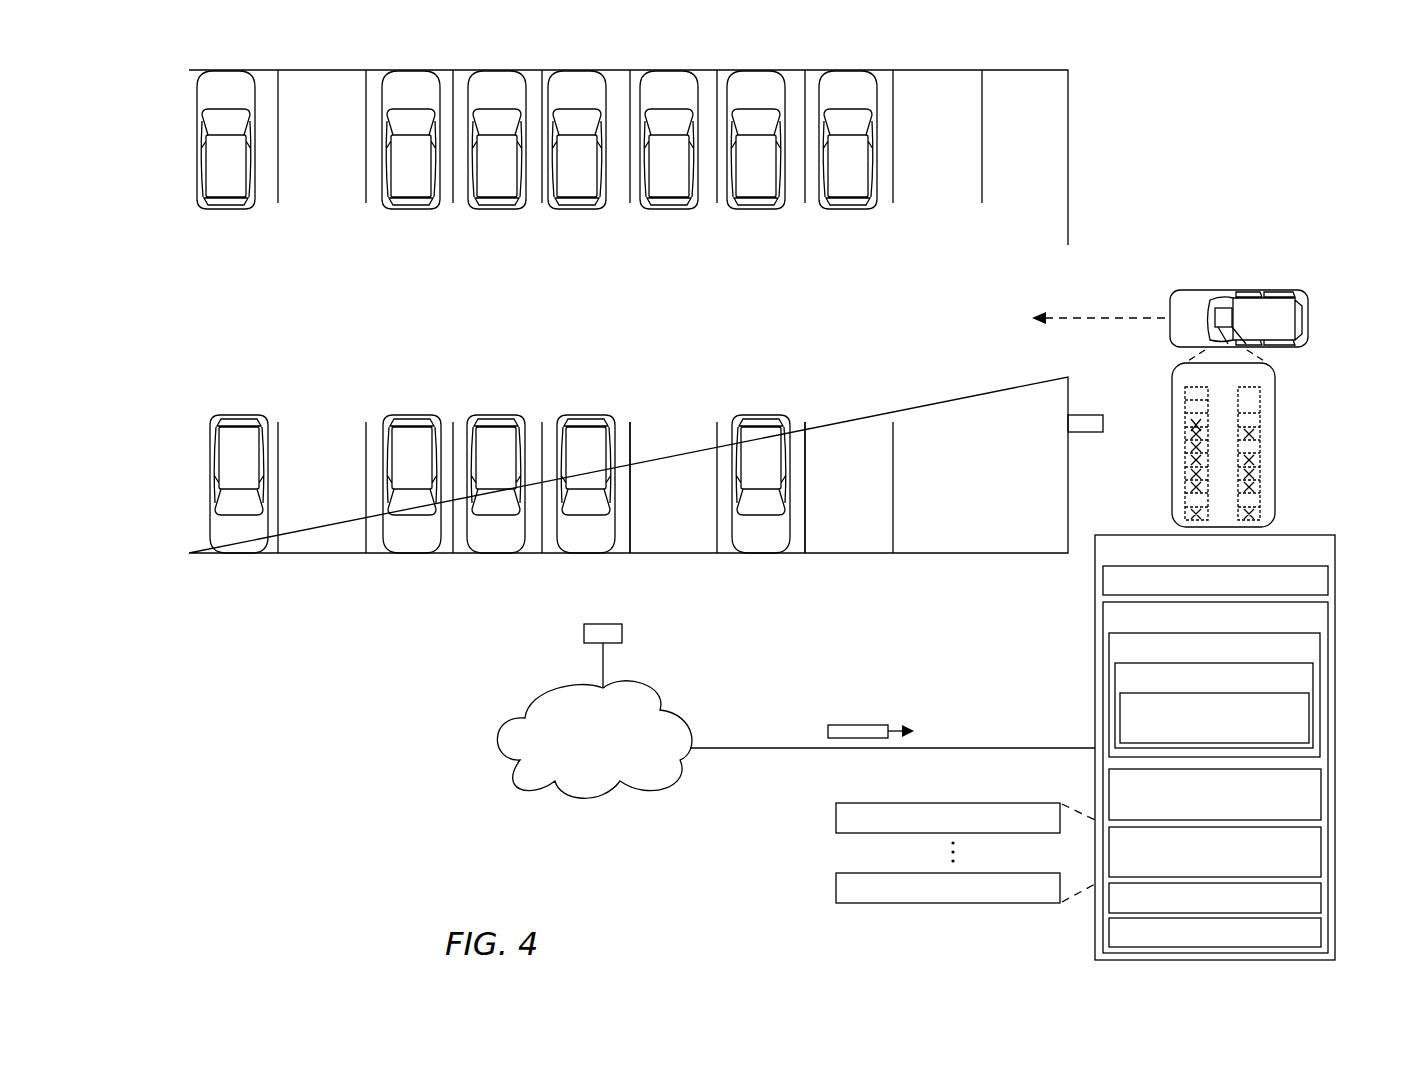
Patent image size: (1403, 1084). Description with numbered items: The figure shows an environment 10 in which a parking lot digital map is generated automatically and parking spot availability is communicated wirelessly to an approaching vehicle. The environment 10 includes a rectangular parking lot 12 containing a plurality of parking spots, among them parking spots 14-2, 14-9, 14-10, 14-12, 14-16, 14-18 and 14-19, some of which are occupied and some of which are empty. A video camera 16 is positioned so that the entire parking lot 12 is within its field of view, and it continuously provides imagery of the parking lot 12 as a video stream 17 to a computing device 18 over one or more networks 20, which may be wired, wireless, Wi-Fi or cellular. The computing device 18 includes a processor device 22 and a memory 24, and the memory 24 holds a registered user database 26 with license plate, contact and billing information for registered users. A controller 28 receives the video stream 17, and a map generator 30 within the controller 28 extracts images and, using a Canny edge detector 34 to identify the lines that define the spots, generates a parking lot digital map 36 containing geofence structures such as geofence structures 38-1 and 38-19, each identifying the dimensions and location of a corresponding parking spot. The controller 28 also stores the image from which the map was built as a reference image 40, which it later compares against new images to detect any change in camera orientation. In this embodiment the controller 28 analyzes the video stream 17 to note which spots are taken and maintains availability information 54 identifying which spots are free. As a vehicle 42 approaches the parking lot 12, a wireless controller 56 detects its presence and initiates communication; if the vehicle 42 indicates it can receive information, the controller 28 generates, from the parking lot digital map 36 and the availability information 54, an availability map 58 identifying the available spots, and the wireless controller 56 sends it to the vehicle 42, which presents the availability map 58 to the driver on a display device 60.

The environment 10 is at (1232, 58).
The parking lot 12 is at (170, 57).
The parking spot 14-2 is at (305, 127).
The parking spot 14-9 is at (918, 127).
The parking spot 14-10 is at (1003, 127).
The parking spot 14-12 is at (355, 514).
The parking spot 14-16 is at (695, 514).
The parking spot 14-18 is at (876, 514).
The parking spot 14-19 is at (993, 514).
The video camera 16 is at (584, 634).
The video stream 17 is at (846, 725).
The computing device 18 is at (1336, 548).
The networks 20 is at (615, 775).
The processor device 22 is at (1328, 580).
The memory 24 is at (1328, 621).
The registered user database 26 is at (1321, 793).
The controller 28 is at (1320, 648).
The map generator 30 is at (1313, 678).
The Canny edge detector 34 is at (1309, 717).
The parking lot digital map 36 is at (1321, 850).
The geofence structure 38-1 is at (835, 818).
The geofence structure 38-19 is at (835, 888).
The reference image 40 is at (1321, 895).
The vehicle 42 is at (1297, 291).
The availability information 54 is at (1321, 931).
The wireless controller 56 is at (1090, 415).
The availability map 58 is at (1262, 400).
The display device 60 is at (1228, 305).